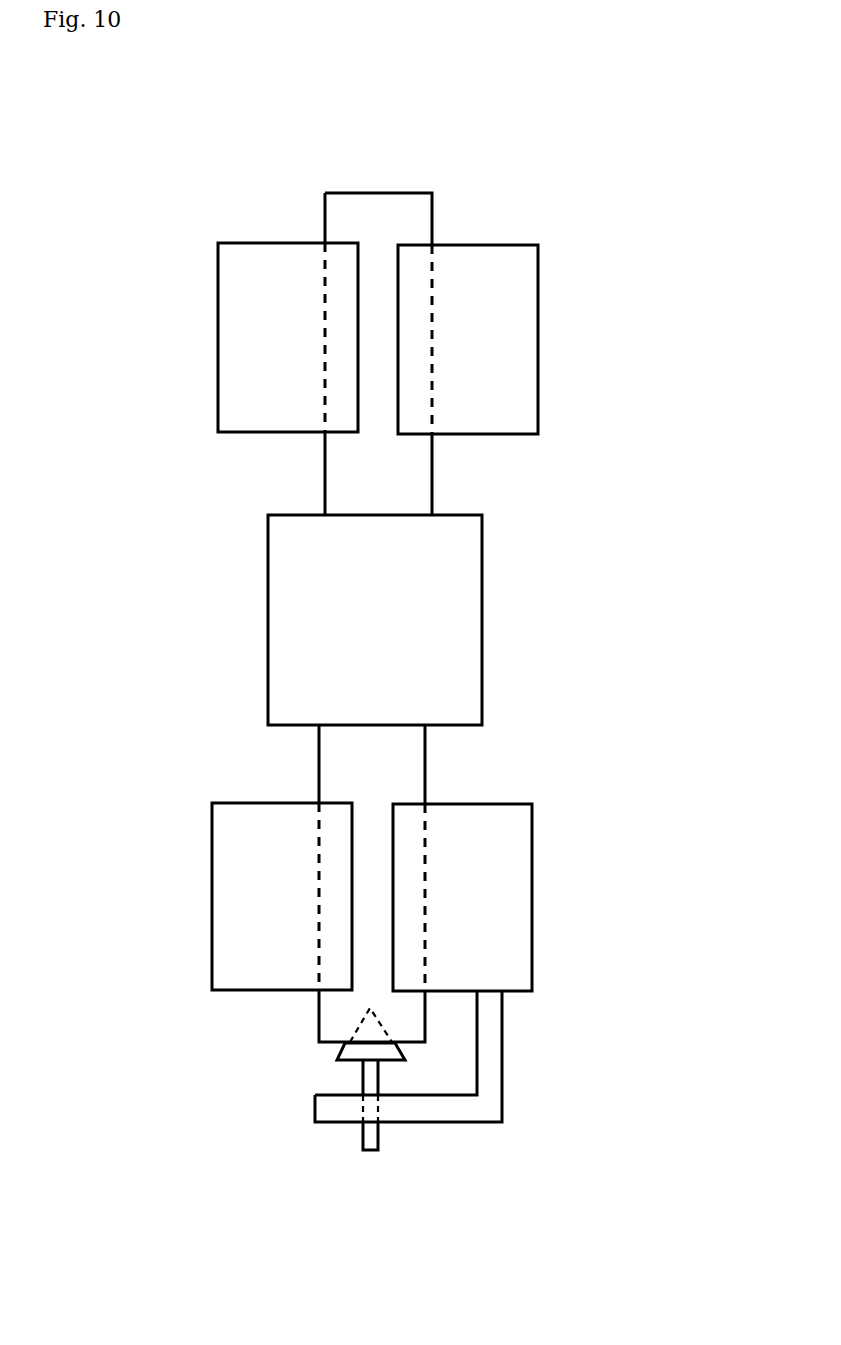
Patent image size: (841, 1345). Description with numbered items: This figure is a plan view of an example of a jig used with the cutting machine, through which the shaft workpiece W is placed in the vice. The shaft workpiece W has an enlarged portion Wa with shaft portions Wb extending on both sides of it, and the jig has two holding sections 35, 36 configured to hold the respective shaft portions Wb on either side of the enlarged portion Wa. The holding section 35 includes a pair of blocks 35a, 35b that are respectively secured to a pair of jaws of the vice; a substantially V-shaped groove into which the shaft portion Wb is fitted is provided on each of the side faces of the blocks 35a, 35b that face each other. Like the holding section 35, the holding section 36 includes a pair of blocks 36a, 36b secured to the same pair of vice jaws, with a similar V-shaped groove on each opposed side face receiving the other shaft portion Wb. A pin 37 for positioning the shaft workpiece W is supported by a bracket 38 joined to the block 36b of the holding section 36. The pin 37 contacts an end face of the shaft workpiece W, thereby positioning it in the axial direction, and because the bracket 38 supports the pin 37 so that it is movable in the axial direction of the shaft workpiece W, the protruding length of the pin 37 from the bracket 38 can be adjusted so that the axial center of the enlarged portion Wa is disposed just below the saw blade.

The shaft workpiece W is at (339, 182).
The enlarged portion Wa is at (465, 647).
The shaft portion Wb is at (427, 217).
The holding section 35 is at (195, 364).
The block 35a is at (240, 345).
The block 35b is at (525, 343).
The holding section 36 is at (188, 922).
The block 36a is at (235, 900).
The block 36b is at (520, 902).
The pin 37 is at (370, 1152).
The bracket 38 is at (452, 1113).